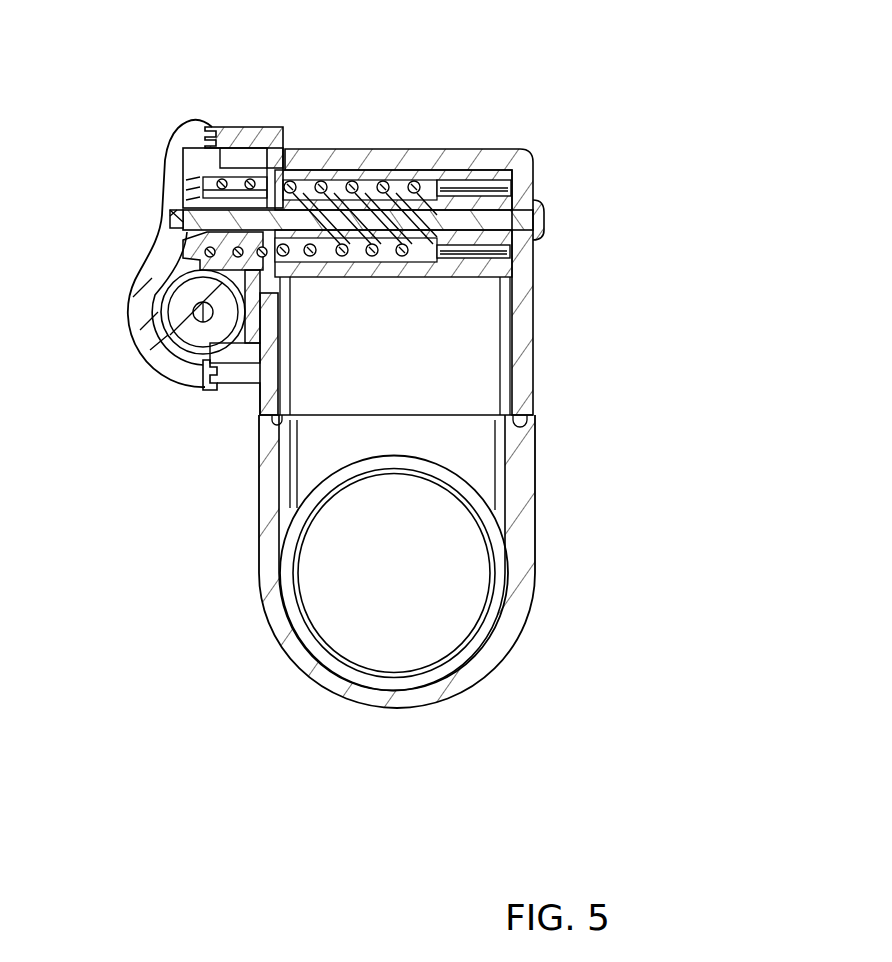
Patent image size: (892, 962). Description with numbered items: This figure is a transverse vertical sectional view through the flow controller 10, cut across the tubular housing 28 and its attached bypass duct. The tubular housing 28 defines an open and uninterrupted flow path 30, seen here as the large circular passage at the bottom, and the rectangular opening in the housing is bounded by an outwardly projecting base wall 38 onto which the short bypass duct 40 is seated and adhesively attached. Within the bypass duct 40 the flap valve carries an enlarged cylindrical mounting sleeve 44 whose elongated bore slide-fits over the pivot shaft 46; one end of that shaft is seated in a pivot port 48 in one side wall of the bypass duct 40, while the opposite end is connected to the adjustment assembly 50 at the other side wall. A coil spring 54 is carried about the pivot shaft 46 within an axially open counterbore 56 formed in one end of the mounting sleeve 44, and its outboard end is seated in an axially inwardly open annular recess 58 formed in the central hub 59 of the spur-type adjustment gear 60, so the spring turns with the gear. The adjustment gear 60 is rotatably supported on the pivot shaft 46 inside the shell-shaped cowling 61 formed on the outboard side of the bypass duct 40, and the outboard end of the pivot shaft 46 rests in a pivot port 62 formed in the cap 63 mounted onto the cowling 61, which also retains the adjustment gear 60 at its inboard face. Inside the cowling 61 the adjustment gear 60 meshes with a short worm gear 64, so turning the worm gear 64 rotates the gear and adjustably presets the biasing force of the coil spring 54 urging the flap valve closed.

The flow controller 10 is at (740, 115).
The tubular housing 28 is at (523, 518).
The flow path 30 is at (397, 640).
The base wall 38 is at (258, 455).
The bypass duct 40 is at (520, 343).
The mounting sleeve 44 is at (435, 180).
The pivot shaft 46 is at (457, 273).
The pivot port 48 is at (544, 206).
The adjustment assembly 50 is at (138, 98).
The coil spring 54 is at (323, 178).
The counterbore 56 is at (340, 274).
The annular recess 58 is at (200, 255).
The central hub 59 is at (238, 158).
The adjustment gear 60 is at (183, 148).
The cowling 61 is at (237, 383).
The pivot port 62 is at (187, 210).
The cap 63 is at (152, 174).
The worm gear 64 is at (187, 325).